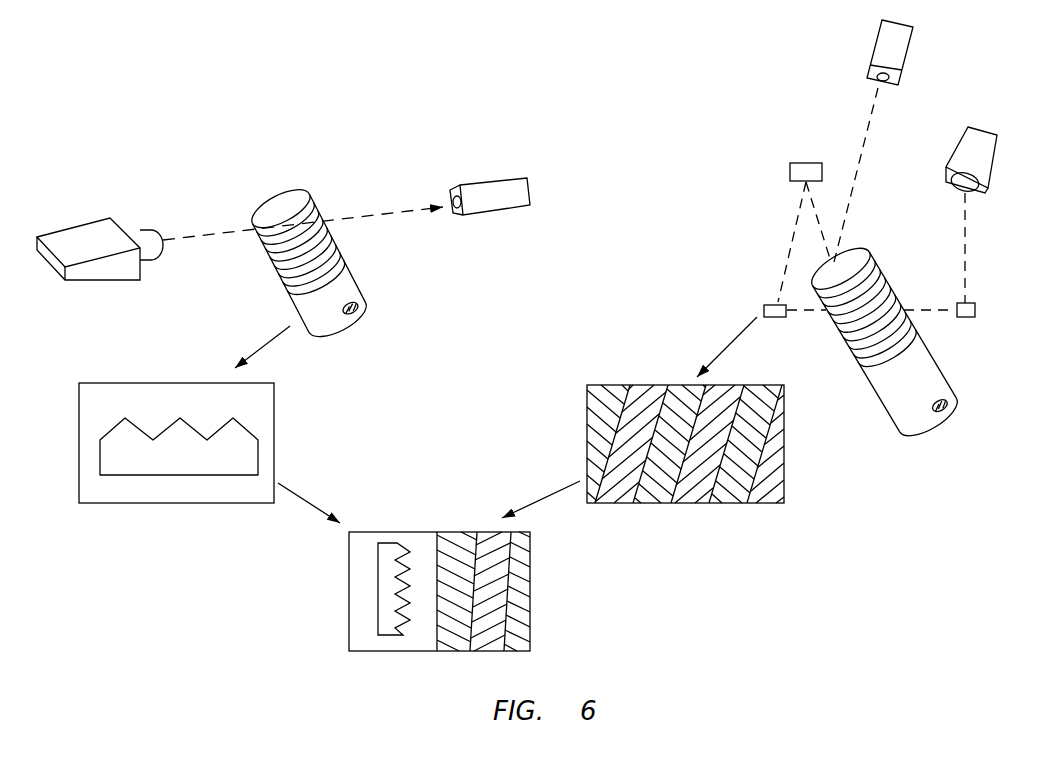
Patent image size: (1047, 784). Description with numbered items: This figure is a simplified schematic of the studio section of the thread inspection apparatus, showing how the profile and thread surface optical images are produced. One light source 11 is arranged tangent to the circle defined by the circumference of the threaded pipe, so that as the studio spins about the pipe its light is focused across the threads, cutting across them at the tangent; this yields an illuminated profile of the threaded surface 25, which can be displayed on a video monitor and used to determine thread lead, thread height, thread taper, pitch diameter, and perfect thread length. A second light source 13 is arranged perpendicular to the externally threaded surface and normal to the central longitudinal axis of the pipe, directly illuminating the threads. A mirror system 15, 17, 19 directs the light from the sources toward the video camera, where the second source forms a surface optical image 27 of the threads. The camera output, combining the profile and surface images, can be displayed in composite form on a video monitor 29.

The light source 11 is at (490, 193).
The second light source 13 is at (897, 55).
The mirror 15 is at (807, 167).
The mirror 17 is at (767, 308).
The mirror 19 is at (967, 305).
The illuminated profile of the threaded surface 25 is at (240, 420).
The surface optical image 27 is at (762, 467).
The video monitor 29 is at (393, 538).